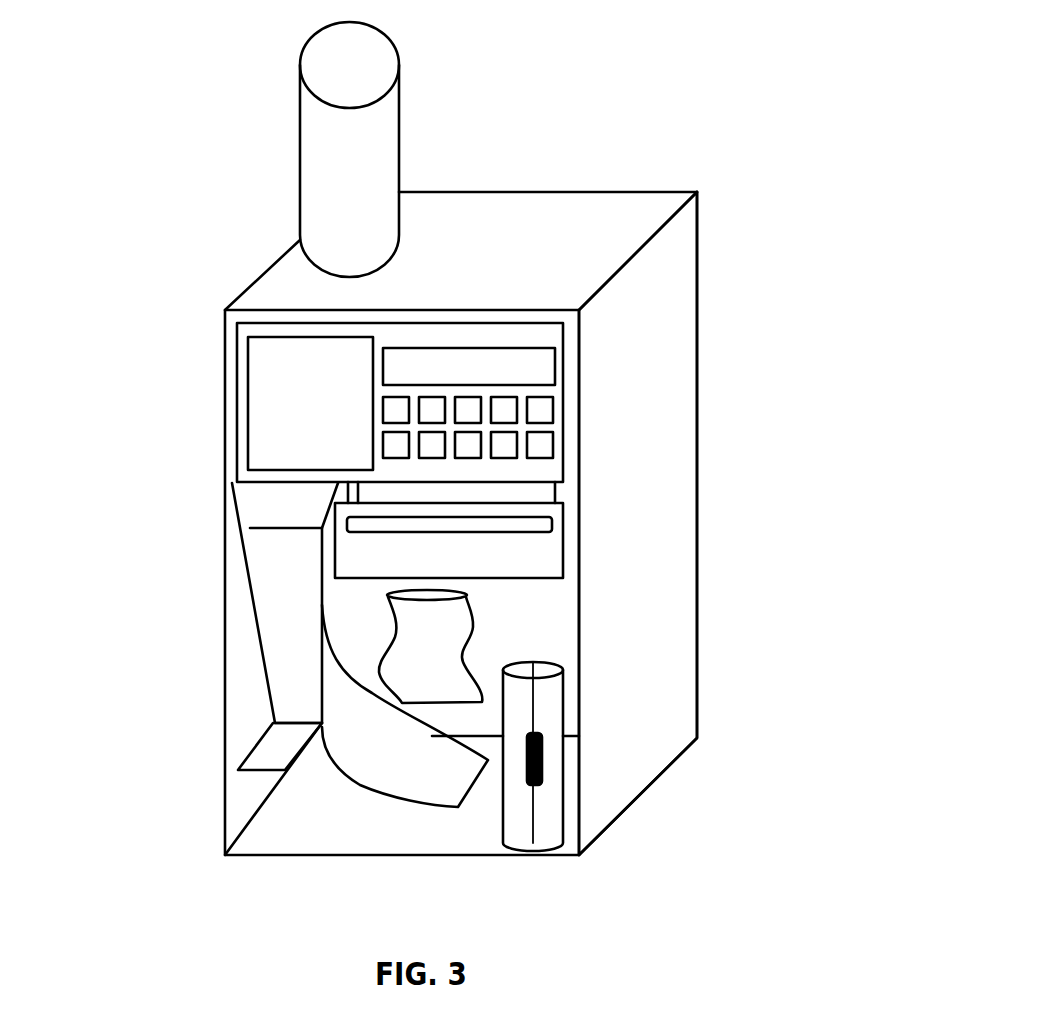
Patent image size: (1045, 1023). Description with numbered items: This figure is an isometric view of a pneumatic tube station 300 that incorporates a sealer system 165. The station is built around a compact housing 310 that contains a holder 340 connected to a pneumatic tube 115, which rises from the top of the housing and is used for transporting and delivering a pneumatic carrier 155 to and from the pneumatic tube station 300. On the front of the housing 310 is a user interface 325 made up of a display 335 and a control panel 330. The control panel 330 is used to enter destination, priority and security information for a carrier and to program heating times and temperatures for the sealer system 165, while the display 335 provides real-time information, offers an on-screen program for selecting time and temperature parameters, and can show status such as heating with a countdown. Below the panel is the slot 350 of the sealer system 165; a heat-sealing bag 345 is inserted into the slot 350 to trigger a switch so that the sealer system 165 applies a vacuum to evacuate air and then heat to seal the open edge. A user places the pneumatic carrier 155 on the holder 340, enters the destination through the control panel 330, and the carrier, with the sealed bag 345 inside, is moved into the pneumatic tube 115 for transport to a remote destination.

The pneumatic tube 115 is at (382, 160).
The pneumatic tube station 300 is at (709, 163).
The compact housing 310 is at (685, 290).
The sealer system 165 is at (612, 450).
The user interface 325 is at (240, 443).
The display 335 is at (323, 362).
The control panel 330 is at (545, 410).
The slot 350 is at (547, 523).
The heat-sealing bag 345 is at (443, 619).
The holder 340 is at (283, 670).
The pneumatic carrier 155 is at (545, 822).